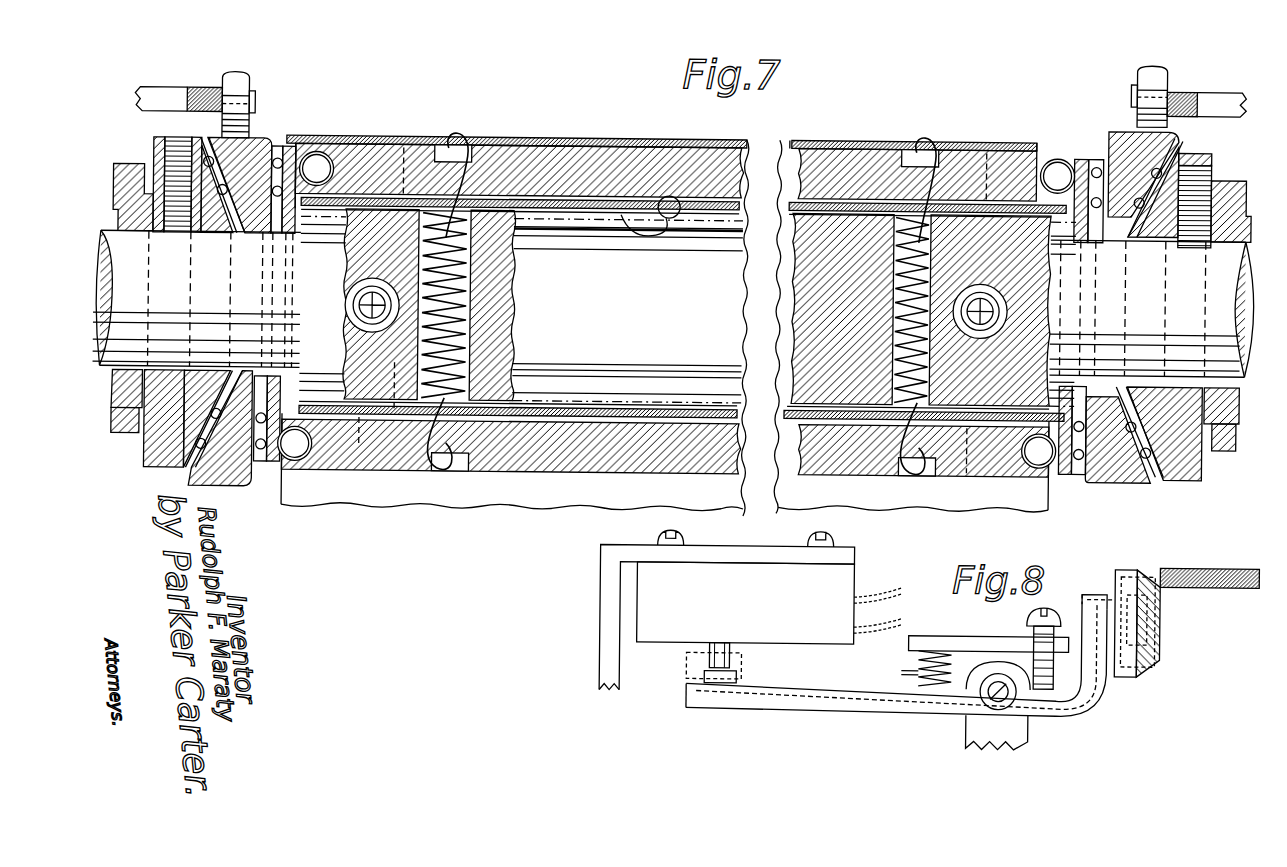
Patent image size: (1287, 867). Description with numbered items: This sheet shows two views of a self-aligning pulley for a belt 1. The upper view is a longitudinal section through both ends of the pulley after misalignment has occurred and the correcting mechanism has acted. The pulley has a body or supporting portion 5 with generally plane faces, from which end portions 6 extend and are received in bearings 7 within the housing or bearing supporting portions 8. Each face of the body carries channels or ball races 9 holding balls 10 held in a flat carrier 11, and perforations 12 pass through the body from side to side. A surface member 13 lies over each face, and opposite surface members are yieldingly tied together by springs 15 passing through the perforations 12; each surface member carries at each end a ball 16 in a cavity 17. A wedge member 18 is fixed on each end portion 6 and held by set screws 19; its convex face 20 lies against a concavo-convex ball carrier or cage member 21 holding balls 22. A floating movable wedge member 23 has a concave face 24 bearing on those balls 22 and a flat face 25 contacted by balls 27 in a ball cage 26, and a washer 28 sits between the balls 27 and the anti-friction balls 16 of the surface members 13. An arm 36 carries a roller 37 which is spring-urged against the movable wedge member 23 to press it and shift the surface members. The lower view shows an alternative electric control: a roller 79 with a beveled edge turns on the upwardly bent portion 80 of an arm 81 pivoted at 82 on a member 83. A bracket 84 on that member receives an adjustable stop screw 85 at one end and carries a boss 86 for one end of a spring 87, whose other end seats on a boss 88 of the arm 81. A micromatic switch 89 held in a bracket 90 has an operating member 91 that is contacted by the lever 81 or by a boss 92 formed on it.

In FIG. 7, the belt 1 is at (580, 139).
In FIG. 8, the belt 1 is at (1220, 583).
In FIG. 7, the body or supporting portion 5 is at (825, 303).
In FIG. 7, the end portions 6 is at (130, 246).
In FIG. 7, the bearings 7 is at (113, 388).
In FIG. 7, the housing or bearing supporting portions 8 is at (128, 440).
In FIG. 7, the channels or ball races 9 is at (572, 243).
In FIG. 7, the balls or anti-friction members 10 is at (404, 148).
In FIG. 7, the carrier 11 is at (742, 222).
In FIG. 7, the perforations 12 is at (352, 284).
In FIG. 7, the surface member 13 is at (616, 165).
In FIG. 7, the springs 15 is at (345, 305).
In FIG. 7, the ball 16 is at (320, 162).
In FIG. 7, the cavity 17 is at (452, 165).
In FIG. 7, the wedge member 18 is at (150, 462).
In FIG. 7, the set screws 19 is at (168, 143).
In FIG. 7, the convex face 20 is at (172, 442).
In FIG. 7, the ball carrier or cage member 21 is at (196, 462).
In FIG. 7, the balls or anti-friction members 22 is at (208, 490).
In FIG. 7, the movable wedge member 23 is at (248, 142).
In FIG. 7, the concave face 24 is at (212, 484).
In FIG. 7, the flat face 25 is at (256, 472).
In FIG. 7, the ball cage or carrier 26 is at (278, 150).
In FIG. 7, the balls or anti-friction members 27 is at (272, 232).
In FIG. 7, the washer 28 is at (288, 150).
In FIG. 7, the arm 36 is at (148, 104).
In FIG. 7, the roller 37 is at (233, 77).
In FIG. 8, the roller 79 is at (1155, 660).
In FIG. 8, the upwardly bent portion 80 is at (1100, 598).
In FIG. 8, the arm 81 is at (806, 672).
In FIG. 8, the pivot 82 is at (1000, 700).
In FIG. 8, the member 83 is at (970, 728).
In FIG. 8, the bracket 84 is at (964, 633).
In FIG. 8, the adjustable stop screw 85 is at (1040, 618).
In FIG. 8, the boss 86 is at (940, 648).
In FIG. 8, the spring 87 is at (922, 670).
In FIG. 8, the boss 88 is at (930, 684).
In FIG. 8, the micromatic switch 89 is at (860, 580).
In FIG. 8, the bracket 90 is at (603, 602).
In FIG. 8, the operating member 91 is at (712, 650).
In FIG. 8, the boss 92 is at (708, 676).